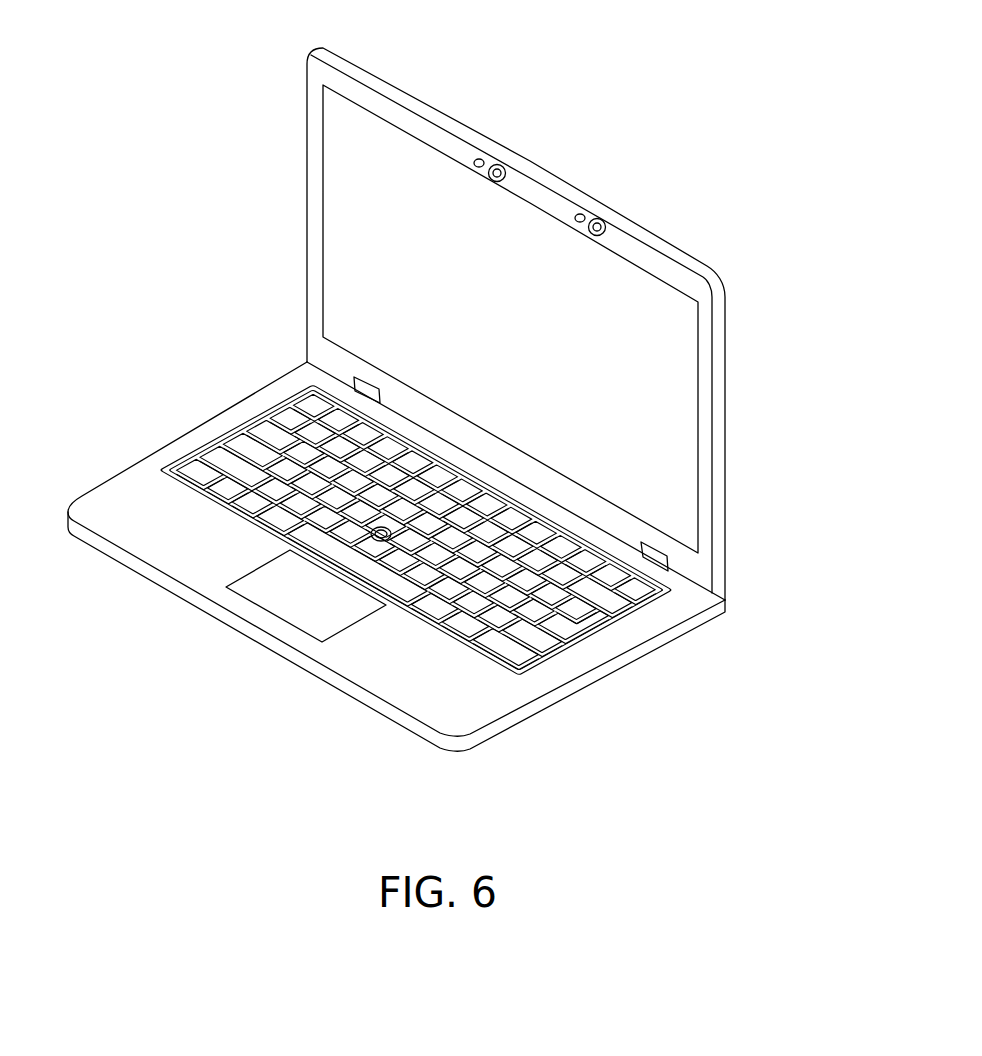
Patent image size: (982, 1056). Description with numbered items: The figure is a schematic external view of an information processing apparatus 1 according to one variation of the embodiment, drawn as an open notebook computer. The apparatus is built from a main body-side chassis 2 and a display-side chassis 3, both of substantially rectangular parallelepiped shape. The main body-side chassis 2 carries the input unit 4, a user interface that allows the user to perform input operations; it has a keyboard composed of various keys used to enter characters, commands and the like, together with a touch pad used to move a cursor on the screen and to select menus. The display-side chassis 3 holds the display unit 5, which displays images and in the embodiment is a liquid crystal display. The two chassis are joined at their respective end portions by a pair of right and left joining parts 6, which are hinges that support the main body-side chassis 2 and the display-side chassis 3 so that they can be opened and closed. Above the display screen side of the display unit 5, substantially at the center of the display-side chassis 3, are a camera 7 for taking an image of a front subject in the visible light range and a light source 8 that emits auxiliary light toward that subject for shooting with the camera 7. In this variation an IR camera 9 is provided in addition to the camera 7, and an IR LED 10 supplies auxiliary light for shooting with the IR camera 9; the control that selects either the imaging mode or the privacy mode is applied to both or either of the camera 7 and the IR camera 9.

The information processing apparatus 1 is at (600, 74).
The main body-side chassis 2 is at (601, 698).
The display-side chassis 3 is at (742, 438).
The input unit 4 is at (183, 437).
The display unit 5 is at (342, 233).
The joining parts 6 is at (368, 382).
The camera 7 is at (497, 166).
The light source 8 is at (478, 158).
The IR camera 9 is at (597, 220).
The IR LED 10 is at (578, 213).